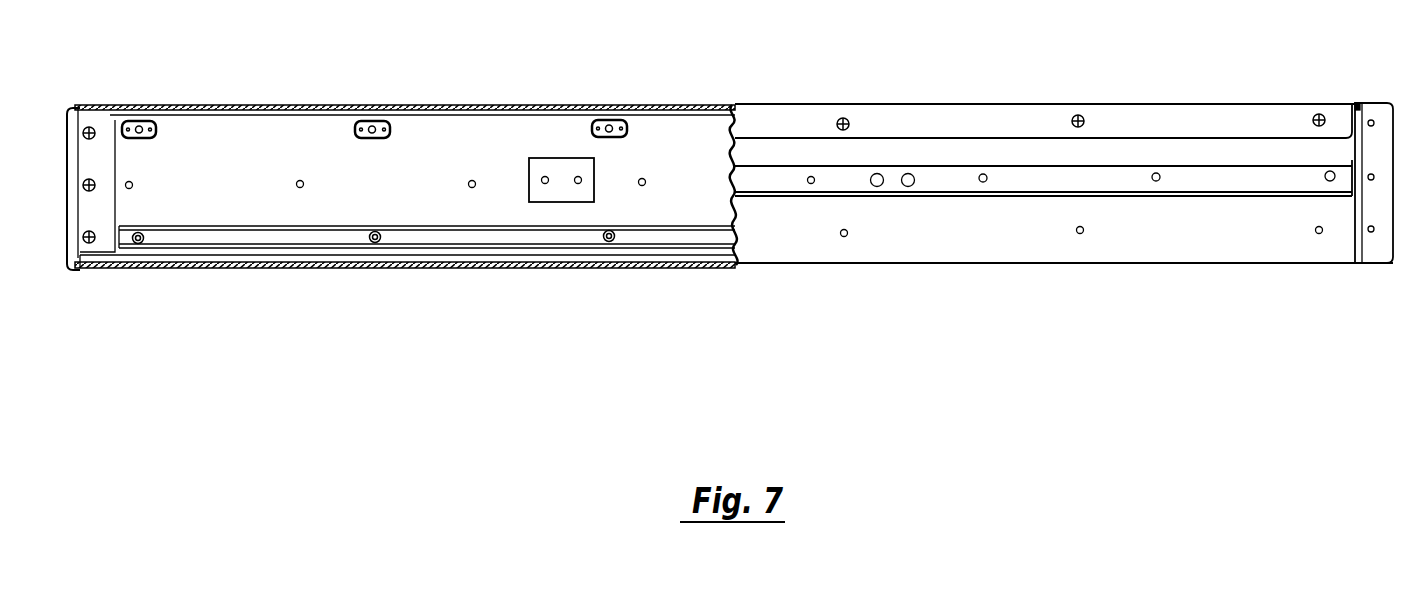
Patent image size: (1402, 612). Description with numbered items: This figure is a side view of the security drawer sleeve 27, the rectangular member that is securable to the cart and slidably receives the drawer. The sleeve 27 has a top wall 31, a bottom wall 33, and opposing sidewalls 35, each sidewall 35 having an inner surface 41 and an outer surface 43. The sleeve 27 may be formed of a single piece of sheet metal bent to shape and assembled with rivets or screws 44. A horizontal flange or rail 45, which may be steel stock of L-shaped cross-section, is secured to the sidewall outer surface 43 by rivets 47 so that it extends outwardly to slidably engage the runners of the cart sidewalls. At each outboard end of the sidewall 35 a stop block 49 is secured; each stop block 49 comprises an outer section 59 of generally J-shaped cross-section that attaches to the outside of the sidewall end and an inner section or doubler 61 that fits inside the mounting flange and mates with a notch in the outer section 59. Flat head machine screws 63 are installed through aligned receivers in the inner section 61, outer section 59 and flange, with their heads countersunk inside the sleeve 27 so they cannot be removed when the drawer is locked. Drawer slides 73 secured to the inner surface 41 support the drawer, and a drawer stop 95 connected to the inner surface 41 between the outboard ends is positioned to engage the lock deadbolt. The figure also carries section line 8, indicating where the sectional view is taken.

The outer section 59 is at (78, 108).
The top wall 31 is at (322, 105).
The bottom wall 33 is at (310, 268).
The inner surface 41 is at (253, 202).
The inner section 61 is at (105, 240).
The flat head machine screws 63 is at (92, 138).
The drawer slides 73 is at (332, 226).
The drawer stop 95 is at (594, 177).
The section line 8- 8 is at (562, 102).
The sleeve 27 is at (908, 102).
The rivets 47 is at (1079, 115).
The stop blocks 49 is at (1380, 102).
The flanges 45 is at (769, 197).
The rivets or screws 44 is at (983, 183).
The outer surface 43 is at (1198, 240).
The sidewalls 35 is at (983, 250).